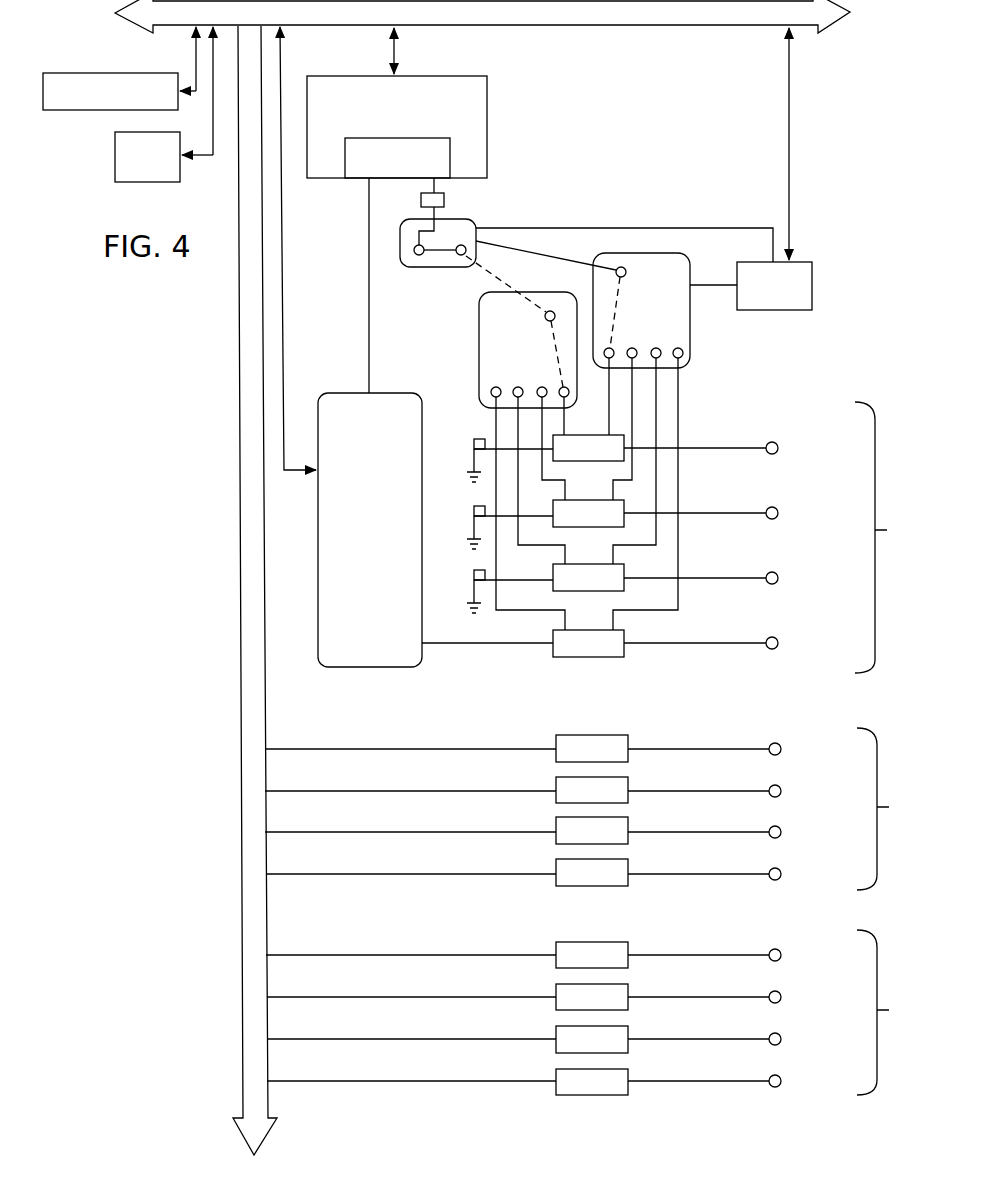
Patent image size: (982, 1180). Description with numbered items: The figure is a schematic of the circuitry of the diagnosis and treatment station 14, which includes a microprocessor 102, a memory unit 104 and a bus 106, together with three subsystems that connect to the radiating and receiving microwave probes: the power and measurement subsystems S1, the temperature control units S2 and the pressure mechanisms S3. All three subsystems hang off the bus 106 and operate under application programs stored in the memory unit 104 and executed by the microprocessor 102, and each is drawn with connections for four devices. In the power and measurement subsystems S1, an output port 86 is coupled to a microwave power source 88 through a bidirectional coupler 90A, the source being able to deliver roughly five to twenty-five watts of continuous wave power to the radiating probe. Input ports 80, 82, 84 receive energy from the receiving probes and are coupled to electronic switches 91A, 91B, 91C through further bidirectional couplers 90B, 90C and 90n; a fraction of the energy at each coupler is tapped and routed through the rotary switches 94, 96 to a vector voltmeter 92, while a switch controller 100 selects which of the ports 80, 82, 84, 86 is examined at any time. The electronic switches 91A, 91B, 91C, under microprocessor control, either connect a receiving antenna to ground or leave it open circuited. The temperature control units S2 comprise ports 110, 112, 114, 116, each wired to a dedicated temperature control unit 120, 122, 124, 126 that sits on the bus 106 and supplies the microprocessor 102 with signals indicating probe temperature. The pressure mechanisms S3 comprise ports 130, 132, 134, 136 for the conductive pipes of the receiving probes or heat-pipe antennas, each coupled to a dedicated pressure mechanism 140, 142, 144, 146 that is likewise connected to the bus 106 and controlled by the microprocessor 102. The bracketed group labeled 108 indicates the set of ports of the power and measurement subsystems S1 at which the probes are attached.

The diagnosis and treatment station 14 is at (880, 180).
The input port 80 is at (766, 444).
The input port 82 is at (767, 509).
The input port 84 is at (767, 574).
The output port 86 is at (767, 639).
The microwave power source 88 is at (318, 667).
The bidirectional coupler 90A is at (606, 657).
The bidirectional coupler 90B is at (588, 591).
The bidirectional coupler 90C is at (588, 527).
The bidirectional coupler 90n is at (588, 461).
The electronic switch 91A is at (478, 439).
The electronic switch 91B is at (478, 506).
The electronic switch 91C is at (478, 570).
The vector voltmeter 92 is at (487, 138).
The rotary switch 94 is at (575, 292).
The rotary switch 96 is at (686, 256).
The switch controller 100 is at (810, 262).
The microprocessor 102 is at (115, 163).
The memory unit 104 is at (70, 73).
The bus 106 is at (600, 26).
The switch bank 108 is at (836, 388).
The port 110 is at (780, 745).
The port 112 is at (780, 787).
The port 114 is at (780, 828).
The port 116 is at (780, 870).
The temperature control unit 120 is at (556, 738).
The temperature control unit 122 is at (556, 780).
The temperature control unit 124 is at (556, 821).
The temperature control unit 126 is at (556, 863).
The port 130 is at (780, 951).
The port 132 is at (780, 993).
The port 134 is at (780, 1035).
The port 136 is at (780, 1077).
The pressure mechanism 140 is at (556, 945).
The pressure mechanism 142 is at (556, 987).
The pressure mechanism 144 is at (556, 1029).
The pressure mechanism 146 is at (556, 1071).
The power and measurement subsystems S1 is at (903, 531).
The temperature control units S2 is at (887, 809).
The pressure mechanisms S3 is at (887, 1012).